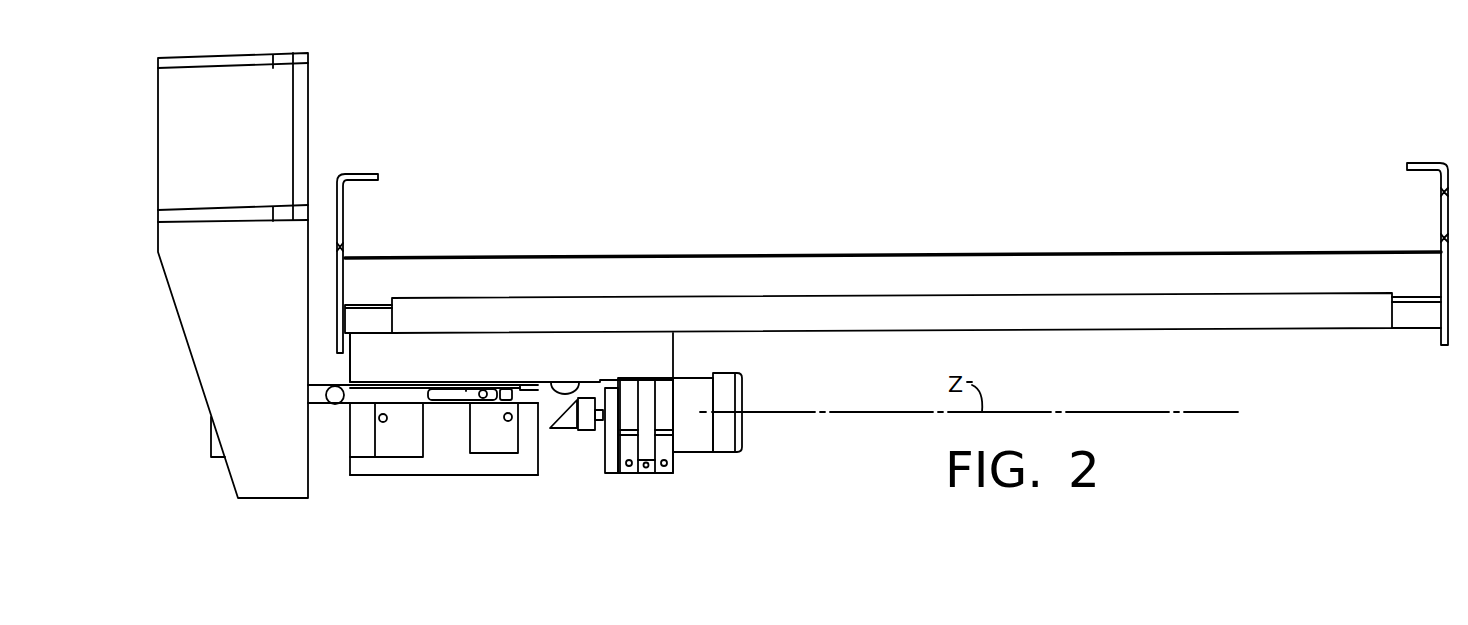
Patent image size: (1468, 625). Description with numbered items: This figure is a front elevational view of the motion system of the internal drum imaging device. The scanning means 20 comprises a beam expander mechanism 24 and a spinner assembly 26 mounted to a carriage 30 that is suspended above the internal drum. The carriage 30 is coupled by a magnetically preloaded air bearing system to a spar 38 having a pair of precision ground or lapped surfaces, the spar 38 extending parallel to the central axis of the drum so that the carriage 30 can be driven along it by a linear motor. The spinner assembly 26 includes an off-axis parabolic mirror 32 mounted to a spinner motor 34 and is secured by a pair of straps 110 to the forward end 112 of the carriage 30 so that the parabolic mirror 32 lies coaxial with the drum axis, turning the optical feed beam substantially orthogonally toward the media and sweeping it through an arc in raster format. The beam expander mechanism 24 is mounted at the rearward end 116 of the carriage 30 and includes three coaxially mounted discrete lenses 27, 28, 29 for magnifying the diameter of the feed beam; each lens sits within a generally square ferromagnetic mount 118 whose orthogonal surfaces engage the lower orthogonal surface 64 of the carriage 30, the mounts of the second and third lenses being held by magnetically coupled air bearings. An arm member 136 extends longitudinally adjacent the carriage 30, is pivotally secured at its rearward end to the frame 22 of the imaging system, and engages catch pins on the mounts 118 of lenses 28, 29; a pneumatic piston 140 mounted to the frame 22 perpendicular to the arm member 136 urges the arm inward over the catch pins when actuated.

The scanning means 20 is at (584, 508).
The frame 22 is at (268, 458).
The beam expander mechanism 24 is at (377, 499).
The spinner assembly 26 is at (696, 469).
The lens 27 is at (355, 443).
The lens 28 is at (402, 442).
The lens 29 is at (505, 447).
The carriage 30 is at (495, 337).
The off-axis parabolic mirror 32 is at (570, 423).
The spinner motor 34 is at (740, 438).
The spar 38 is at (698, 277).
The lower orthogonal surface 64 is at (551, 382).
The straps 110 is at (662, 392).
The forward end 112 is at (684, 355).
The rearward end 116 is at (338, 368).
The lens mount 118 is at (402, 418).
The arm member 136 is at (407, 391).
The pneumatic piston 140 is at (327, 399).